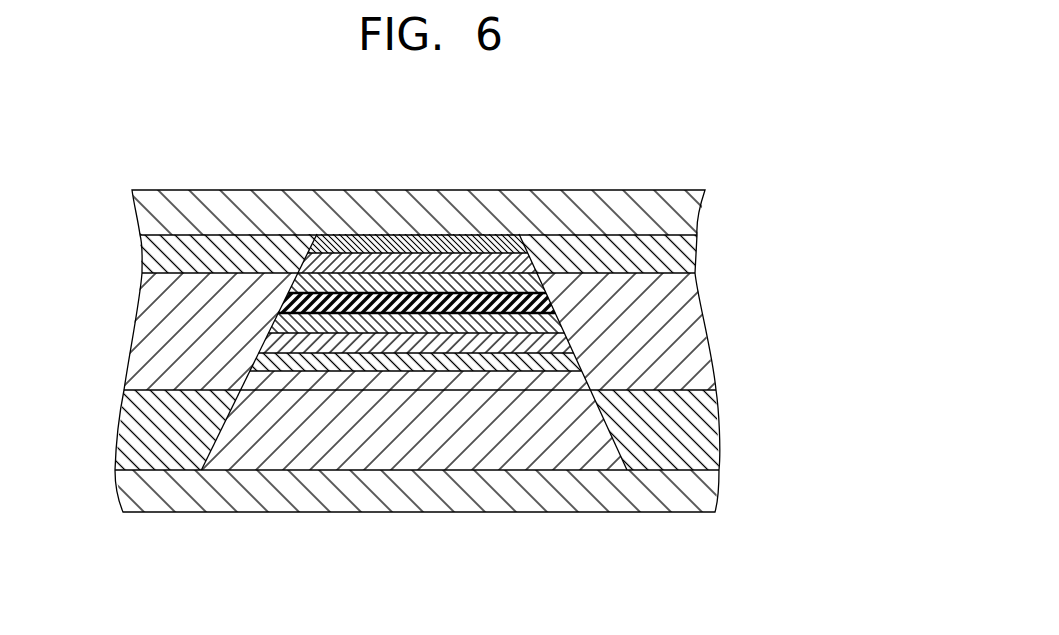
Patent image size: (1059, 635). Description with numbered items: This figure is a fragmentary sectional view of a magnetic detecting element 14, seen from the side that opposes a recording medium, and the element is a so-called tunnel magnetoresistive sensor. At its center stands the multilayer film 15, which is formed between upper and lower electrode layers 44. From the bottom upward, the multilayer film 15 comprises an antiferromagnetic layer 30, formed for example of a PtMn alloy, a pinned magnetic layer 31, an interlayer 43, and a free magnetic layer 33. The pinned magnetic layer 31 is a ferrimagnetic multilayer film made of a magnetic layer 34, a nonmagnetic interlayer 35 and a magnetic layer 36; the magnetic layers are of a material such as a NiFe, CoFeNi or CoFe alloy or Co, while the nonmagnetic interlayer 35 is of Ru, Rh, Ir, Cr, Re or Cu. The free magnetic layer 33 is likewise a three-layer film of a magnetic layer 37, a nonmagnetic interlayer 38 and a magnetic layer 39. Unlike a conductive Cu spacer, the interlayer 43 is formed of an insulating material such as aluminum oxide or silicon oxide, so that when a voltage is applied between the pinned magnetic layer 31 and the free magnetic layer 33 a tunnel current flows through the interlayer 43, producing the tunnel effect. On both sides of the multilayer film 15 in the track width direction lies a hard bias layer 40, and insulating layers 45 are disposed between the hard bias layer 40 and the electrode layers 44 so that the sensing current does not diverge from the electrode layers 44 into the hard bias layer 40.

The magnetic detecting element 14 is at (580, 191).
The multilayer film 15 is at (329, 234).
The antiferromagnetic layer 30 is at (253, 423).
The pinned magnetic layer 31 is at (440, 555).
The free magnetic layer 33 is at (500, 138).
The magnetic layer 34 is at (320, 365).
The nonmagnetic interlayer 35 is at (367, 343).
The magnetic layer 36 is at (405, 325).
The magnetic layer 37 is at (367, 283).
The nonmagnetic interlayer 38 is at (422, 265).
The magnetic layer 39 is at (472, 248).
The hard bias layer 40 is at (150, 305).
The interlayer 43 is at (537, 303).
The electrode layers 44 is at (145, 215).
The insulating layers 45 is at (145, 260).